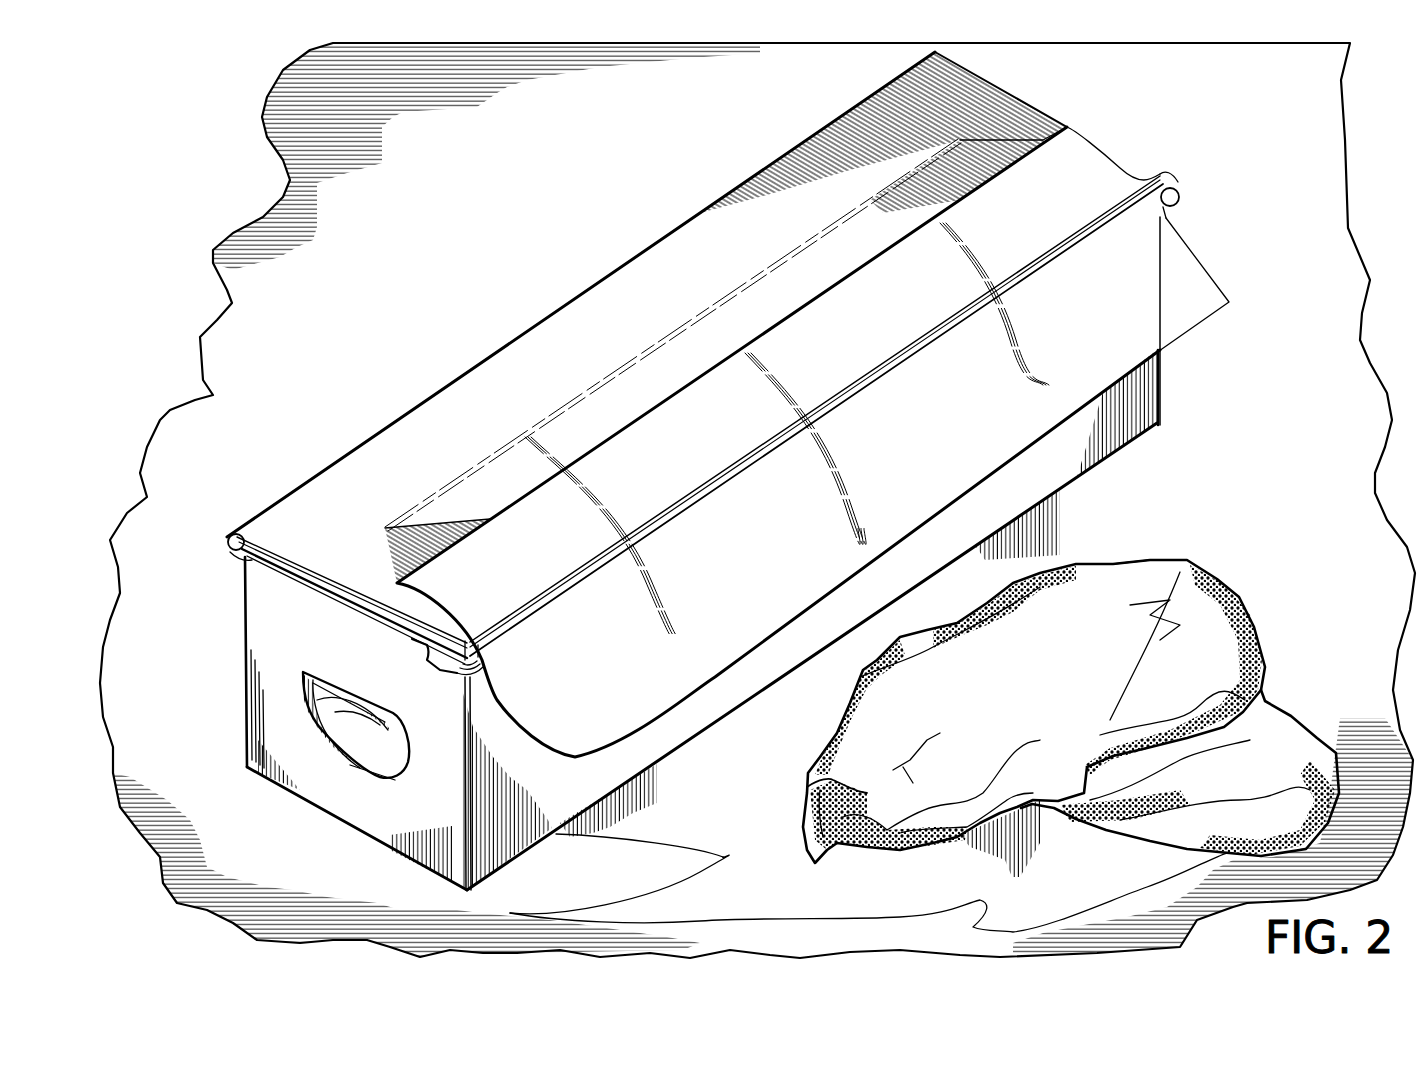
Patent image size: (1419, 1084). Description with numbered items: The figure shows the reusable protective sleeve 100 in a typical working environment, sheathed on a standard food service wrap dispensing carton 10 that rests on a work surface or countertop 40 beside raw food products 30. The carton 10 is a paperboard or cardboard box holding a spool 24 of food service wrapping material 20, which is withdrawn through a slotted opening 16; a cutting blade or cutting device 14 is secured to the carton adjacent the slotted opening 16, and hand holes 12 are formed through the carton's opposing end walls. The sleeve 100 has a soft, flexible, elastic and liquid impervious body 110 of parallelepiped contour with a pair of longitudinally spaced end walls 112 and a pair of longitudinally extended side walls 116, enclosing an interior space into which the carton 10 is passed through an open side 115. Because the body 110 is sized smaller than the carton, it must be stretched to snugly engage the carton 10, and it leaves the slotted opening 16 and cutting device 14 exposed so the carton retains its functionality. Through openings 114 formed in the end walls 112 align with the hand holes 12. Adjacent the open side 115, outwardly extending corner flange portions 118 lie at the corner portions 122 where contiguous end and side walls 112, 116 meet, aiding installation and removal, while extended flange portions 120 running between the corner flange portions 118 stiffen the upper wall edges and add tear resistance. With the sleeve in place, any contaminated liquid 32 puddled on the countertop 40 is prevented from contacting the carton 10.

The food service wrap dispensing carton 10 is at (749, 404).
The hand holes 12 is at (377, 750).
The cutting blade or cutting device 14 is at (1163, 173).
The slotted opening 16 is at (397, 577).
The food service wrapping material 20 is at (1194, 306).
The spool 24 is at (293, 777).
The raw food products 30 is at (1071, 665).
The contaminated liquid 32 is at (1077, 543).
The work surface or countertop 40 is at (1345, 388).
The reusable protective sleeve 100 is at (674, 510).
The body 110 is at (250, 570).
The end walls 112 is at (273, 673).
The through openings 114 is at (387, 757).
The open side 115 is at (293, 566).
The side walls 116 is at (510, 817).
The corner flange portions 118 is at (247, 527).
The extended flange portions 120 is at (297, 597).
The corner portions 122 is at (257, 753).